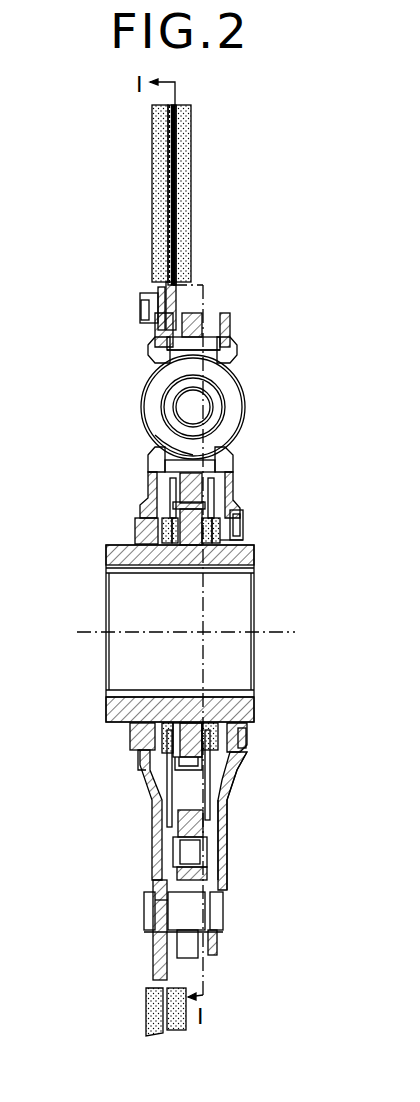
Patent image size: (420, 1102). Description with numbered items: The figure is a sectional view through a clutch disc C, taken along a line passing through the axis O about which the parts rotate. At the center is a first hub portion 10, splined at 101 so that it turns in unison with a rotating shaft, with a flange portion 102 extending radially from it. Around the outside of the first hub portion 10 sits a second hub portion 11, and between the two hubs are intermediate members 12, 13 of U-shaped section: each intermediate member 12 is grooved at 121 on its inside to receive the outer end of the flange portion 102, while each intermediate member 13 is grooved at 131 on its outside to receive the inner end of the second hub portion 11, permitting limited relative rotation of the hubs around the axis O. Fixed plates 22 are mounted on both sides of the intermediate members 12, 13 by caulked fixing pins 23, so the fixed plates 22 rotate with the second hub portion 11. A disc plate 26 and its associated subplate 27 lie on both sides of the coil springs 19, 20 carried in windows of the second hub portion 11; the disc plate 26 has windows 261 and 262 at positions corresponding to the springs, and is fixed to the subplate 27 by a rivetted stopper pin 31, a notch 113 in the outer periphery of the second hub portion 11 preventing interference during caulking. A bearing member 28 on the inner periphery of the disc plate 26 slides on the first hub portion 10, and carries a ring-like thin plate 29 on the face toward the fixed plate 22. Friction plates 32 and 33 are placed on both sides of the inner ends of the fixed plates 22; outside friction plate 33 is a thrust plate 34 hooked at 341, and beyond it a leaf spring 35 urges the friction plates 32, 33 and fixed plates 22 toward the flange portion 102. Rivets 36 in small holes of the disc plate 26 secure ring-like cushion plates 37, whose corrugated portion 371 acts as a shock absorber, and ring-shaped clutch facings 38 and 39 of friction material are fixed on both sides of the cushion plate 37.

The first hub portion 10 is at (213, 633).
The spline 101 is at (215, 560).
The flange portion 102 is at (190, 545).
The second hub portion 11 is at (205, 318).
The notch 113 is at (180, 946).
The intermediate member 12 is at (257, 821).
The groove 121 is at (230, 514).
The intermediate member 13 is at (228, 800).
The groove 131 is at (207, 830).
The coil spring 19 is at (168, 398).
The coil spring 20 is at (152, 422).
The fixed plate 22 is at (170, 482).
The fixing pin 23 is at (217, 862).
The disc plate 26 is at (150, 494).
The window 261 is at (148, 357).
The window 262 is at (148, 316).
The subplate 27 is at (237, 465).
The bearing member 28 is at (135, 530).
The thin plate 29 is at (140, 765).
The stopper pin 31 is at (170, 908).
The friction plate 32 is at (197, 740).
The friction plate 33 is at (160, 735).
The thrust plate 34 is at (228, 742).
The leaf spring 35 is at (240, 735).
The hook 341 is at (230, 540).
The rivet 36 is at (150, 298).
The cushion plate 37 is at (168, 252).
The corrugated portion 371 is at (170, 200).
The clutch facing 38 is at (155, 152).
The clutch facing 39 is at (192, 158).
The clutch disc C is at (200, 232).
The axis O is at (95, 632).